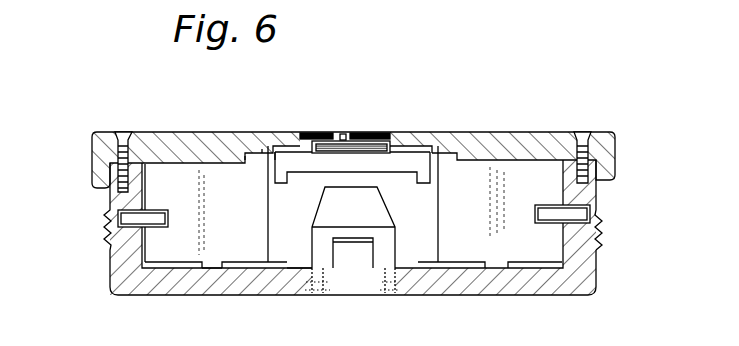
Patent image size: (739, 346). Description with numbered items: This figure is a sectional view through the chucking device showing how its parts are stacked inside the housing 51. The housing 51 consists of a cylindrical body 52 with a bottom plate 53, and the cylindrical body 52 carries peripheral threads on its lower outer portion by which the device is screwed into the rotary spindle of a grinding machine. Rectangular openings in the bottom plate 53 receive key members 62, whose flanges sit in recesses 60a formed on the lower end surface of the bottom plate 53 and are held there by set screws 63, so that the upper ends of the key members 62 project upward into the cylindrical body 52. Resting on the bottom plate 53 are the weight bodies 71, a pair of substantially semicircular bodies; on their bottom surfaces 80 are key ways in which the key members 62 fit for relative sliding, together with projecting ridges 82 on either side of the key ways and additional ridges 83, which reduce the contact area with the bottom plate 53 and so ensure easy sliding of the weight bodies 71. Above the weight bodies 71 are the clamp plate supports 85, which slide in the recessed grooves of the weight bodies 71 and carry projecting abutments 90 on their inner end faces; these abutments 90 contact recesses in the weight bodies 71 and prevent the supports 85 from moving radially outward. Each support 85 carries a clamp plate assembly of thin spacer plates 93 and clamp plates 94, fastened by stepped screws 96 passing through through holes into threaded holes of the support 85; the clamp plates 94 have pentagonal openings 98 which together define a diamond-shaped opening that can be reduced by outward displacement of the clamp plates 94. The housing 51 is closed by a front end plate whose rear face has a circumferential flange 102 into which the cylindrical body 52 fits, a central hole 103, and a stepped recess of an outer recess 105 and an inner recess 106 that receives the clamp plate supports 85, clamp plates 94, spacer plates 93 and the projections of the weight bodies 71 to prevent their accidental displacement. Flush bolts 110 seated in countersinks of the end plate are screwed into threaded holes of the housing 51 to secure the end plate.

The housing 51 is at (369, 246).
The cylindrical body 52 is at (600, 195).
The bottom plate 53 is at (182, 266).
The recess 60a is at (345, 263).
The key member 62 is at (353, 256).
The set screw 63 is at (318, 290).
The weight body 71 is at (349, 140).
The bottom surface 80 is at (408, 270).
The projecting ridge 82 is at (297, 260).
The additional ridge 83 is at (210, 275).
The clamp plate support 85 is at (415, 153).
The projecting abutment 90 is at (338, 204).
The spacer plate 93 is at (332, 102).
The clamp plate 94 is at (376, 112).
The stepped screw 96 is at (350, 137).
The pentagonal opening 98 is at (340, 158).
The circumferential flange 102 is at (95, 152).
The central hole 103 is at (310, 150).
The outer recess 105 is at (257, 158).
The inner recess 106 is at (285, 153).
The flush bolt 110 is at (117, 133).